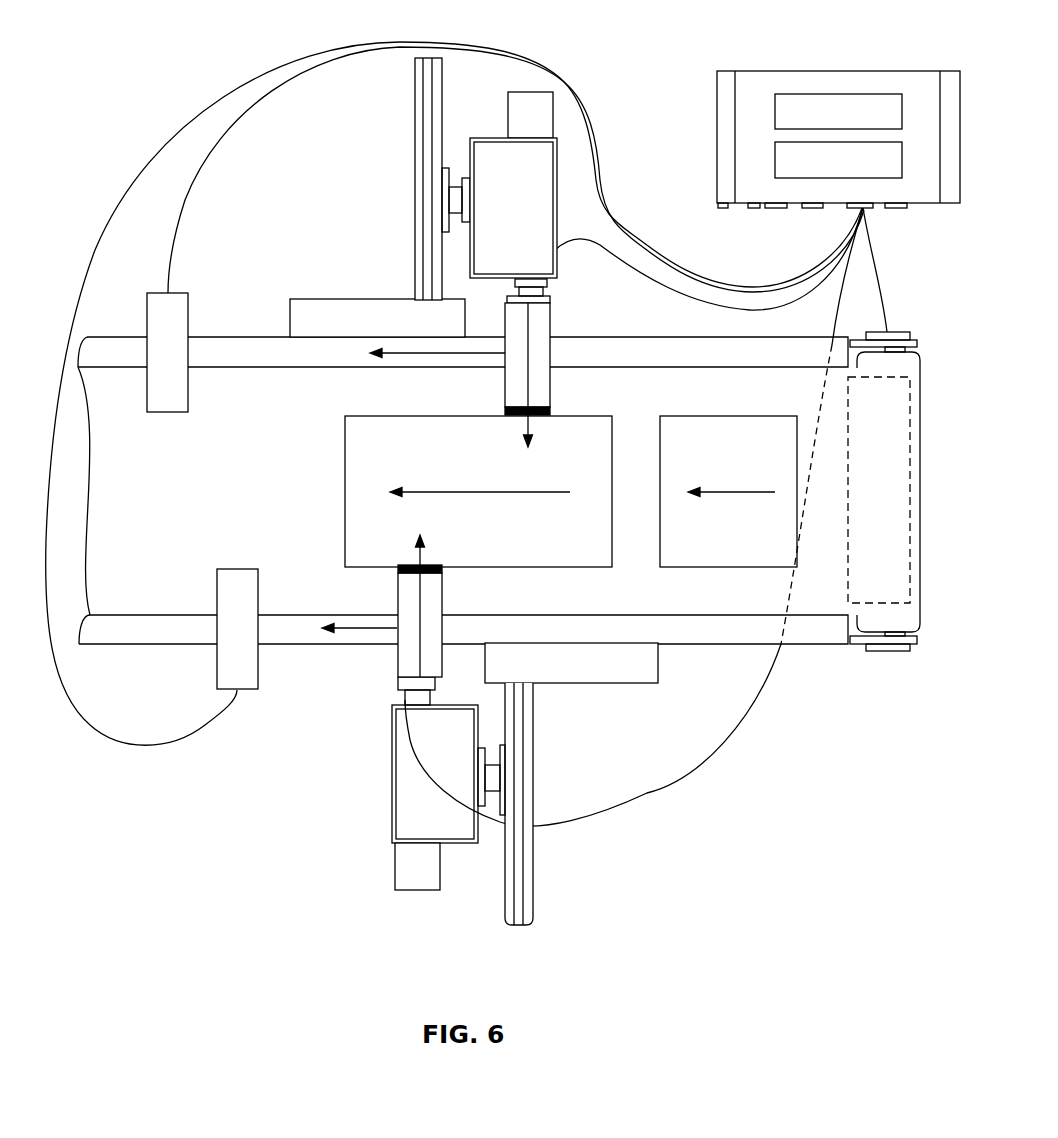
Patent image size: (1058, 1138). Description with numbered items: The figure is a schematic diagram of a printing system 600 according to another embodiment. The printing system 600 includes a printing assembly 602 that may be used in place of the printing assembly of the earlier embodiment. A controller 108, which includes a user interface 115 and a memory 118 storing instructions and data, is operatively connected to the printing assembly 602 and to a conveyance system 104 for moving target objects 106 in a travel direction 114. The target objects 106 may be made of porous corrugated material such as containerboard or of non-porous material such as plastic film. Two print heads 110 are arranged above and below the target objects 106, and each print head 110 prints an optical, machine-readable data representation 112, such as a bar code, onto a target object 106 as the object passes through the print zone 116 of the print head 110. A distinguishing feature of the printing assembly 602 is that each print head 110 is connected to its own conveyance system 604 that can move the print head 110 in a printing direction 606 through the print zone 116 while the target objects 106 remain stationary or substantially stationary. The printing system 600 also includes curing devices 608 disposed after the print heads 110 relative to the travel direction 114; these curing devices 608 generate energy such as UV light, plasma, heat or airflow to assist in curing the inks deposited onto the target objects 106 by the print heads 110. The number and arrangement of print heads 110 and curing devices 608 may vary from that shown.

The printing system 600 is at (150, 90).
The controller 108 is at (796, 117).
The memory 118 is at (775, 112).
The user interface 115 is at (775, 162).
The conveyance system 104 is at (812, 650).
The target object 106 is at (562, 549).
The print head 110 is at (553, 326).
The machine-readable data representation 112 is at (510, 413).
The travel direction 114 is at (448, 490).
The print zone 116 is at (532, 430).
The printing assembly 602 is at (370, 895).
The conveyance system 604 is at (320, 298).
The printing direction 606 is at (400, 352).
The curing device 608 is at (190, 316).